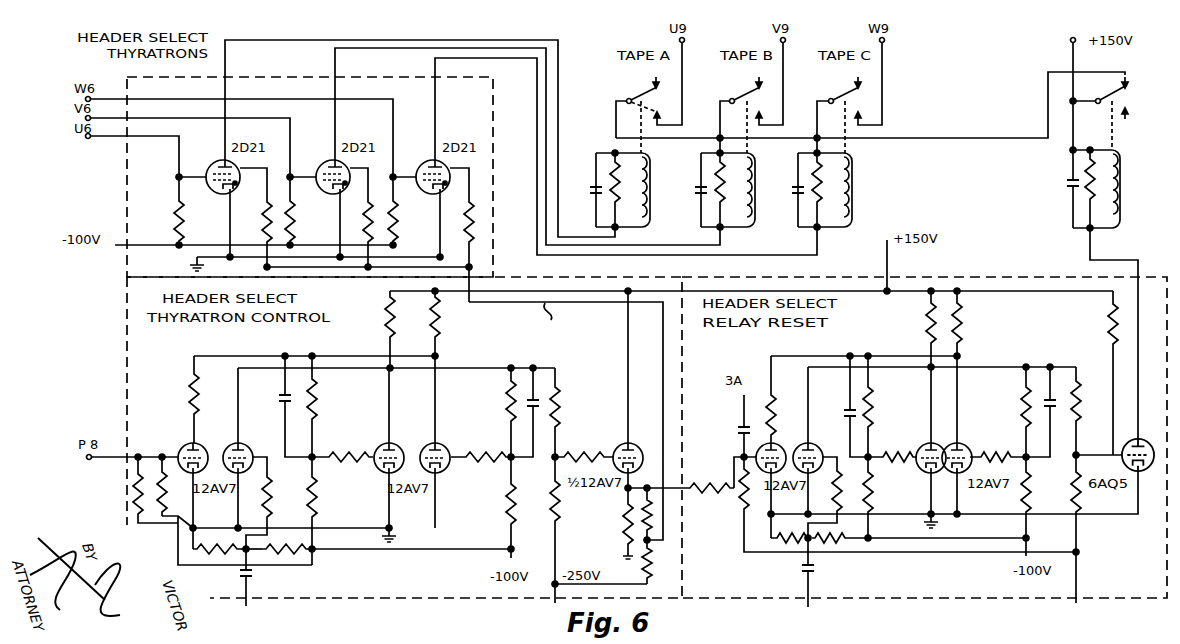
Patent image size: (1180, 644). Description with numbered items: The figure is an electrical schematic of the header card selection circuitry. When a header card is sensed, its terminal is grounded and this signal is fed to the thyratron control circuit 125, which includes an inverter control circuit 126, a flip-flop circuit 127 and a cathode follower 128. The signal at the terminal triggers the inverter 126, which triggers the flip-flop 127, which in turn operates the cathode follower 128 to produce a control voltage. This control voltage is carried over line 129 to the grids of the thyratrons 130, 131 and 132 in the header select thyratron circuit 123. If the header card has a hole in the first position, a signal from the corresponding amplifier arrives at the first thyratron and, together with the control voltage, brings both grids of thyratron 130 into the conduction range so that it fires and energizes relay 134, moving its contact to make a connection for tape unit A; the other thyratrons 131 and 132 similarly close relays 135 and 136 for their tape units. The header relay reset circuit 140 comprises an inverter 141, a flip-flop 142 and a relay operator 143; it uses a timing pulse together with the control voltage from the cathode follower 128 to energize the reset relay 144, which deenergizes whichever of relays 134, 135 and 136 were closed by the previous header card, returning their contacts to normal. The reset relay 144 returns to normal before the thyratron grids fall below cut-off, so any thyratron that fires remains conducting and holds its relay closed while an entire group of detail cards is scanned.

The header select thyratron circuit 123 is at (143, 262).
The thyratron control circuit 125 is at (368, 574).
The inverter control circuit 126 is at (180, 446).
The flip-flop circuit 127 is at (377, 446).
The cathode follower 128 is at (615, 446).
The line 129 is at (566, 421).
The thyratron 130 is at (212, 163).
The thyratron 131 is at (322, 163).
The thyratron 132 is at (422, 163).
The relay 134 is at (646, 182).
The relay 135 is at (752, 202).
The relay 136 is at (852, 202).
The header relay reset circuit 140 is at (1012, 582).
The inverter 141 is at (802, 446).
The flip-flop 142 is at (957, 446).
The relay operator 143 is at (1150, 468).
The reset relay 144 is at (1120, 202).